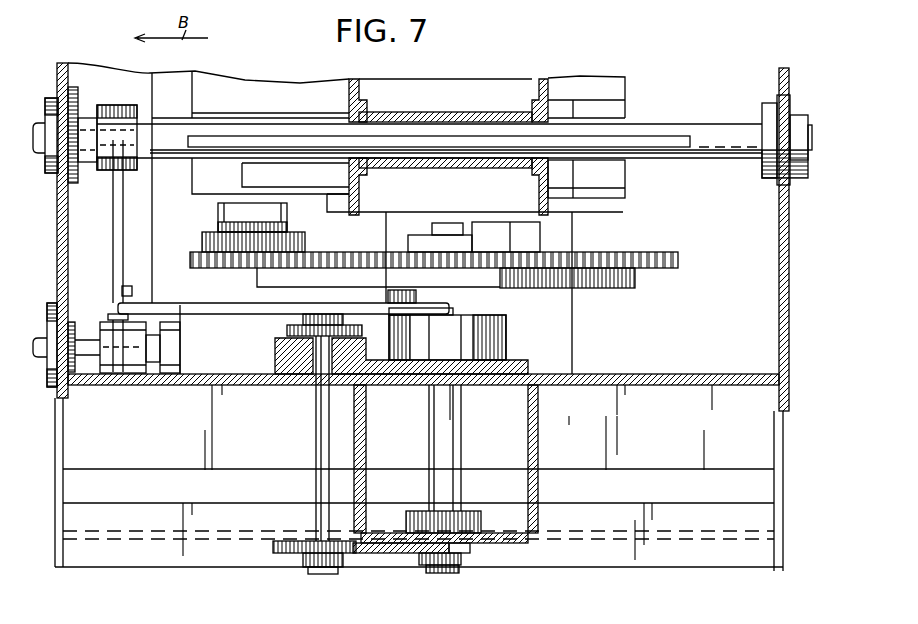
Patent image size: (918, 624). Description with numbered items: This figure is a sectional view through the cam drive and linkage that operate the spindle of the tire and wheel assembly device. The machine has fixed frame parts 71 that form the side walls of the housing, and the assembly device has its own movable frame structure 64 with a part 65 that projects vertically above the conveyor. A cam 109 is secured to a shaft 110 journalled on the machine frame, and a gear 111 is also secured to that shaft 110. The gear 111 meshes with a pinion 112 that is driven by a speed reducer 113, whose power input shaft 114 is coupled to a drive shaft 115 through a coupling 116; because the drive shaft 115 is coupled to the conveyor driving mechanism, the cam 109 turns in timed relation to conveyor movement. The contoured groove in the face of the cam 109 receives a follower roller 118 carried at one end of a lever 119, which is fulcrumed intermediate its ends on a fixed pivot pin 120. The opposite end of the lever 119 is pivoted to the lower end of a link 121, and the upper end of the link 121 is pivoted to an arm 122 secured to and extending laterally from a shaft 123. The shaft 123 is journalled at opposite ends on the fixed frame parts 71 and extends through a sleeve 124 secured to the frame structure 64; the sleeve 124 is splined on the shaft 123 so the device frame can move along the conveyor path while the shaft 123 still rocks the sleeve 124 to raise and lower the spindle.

The frame structure 64 is at (375, 104).
The part 65 is at (545, 90).
The fixed frame parts 71 is at (62, 250).
The cam 109 is at (612, 290).
The shaft 110 is at (453, 459).
The gear 111 is at (630, 262).
The pinion 112 is at (190, 252).
The speed reducer 113 is at (262, 360).
The power input shaft 114 is at (160, 366).
The drive shaft 115 is at (42, 356).
The coupling 116 is at (112, 368).
The roller 118 is at (458, 297).
The lever 119 is at (245, 305).
The fixed pivot pin 120 is at (325, 314).
The link 121 is at (122, 293).
The arm 122 is at (120, 205).
The shaft 123 is at (745, 150).
The sleeve 124 is at (515, 162).